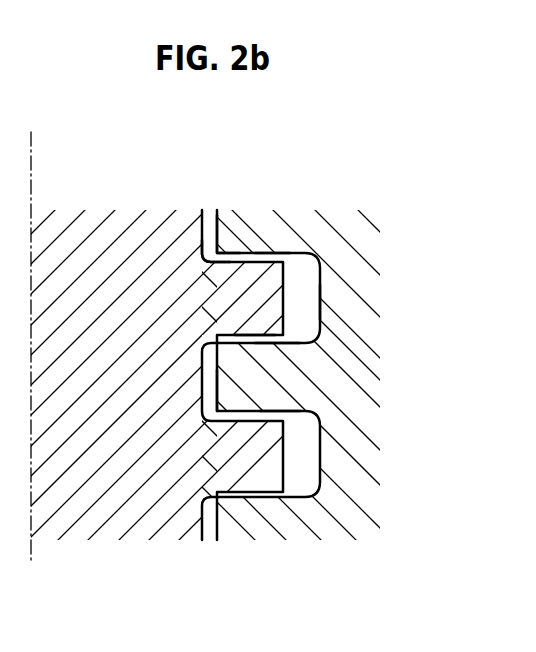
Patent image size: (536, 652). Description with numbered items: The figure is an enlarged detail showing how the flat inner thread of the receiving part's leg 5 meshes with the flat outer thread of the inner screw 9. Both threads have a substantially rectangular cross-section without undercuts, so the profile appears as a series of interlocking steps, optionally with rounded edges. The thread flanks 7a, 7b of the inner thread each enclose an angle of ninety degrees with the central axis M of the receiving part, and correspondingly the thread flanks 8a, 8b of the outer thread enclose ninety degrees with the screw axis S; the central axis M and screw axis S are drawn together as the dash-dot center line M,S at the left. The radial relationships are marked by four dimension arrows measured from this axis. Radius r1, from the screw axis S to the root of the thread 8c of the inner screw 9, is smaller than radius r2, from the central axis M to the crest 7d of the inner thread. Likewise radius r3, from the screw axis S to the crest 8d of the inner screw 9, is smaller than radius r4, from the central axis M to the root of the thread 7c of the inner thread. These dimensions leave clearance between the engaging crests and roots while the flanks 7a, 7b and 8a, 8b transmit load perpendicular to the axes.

The second component (housing body) 5 is at (345, 215).
The inner screw 9 is at (74, 217).
The thread flank of the inner thread 7a is at (273, 356).
The thread flank of the inner thread 7b is at (280, 413).
The root of the inner thread 7c is at (322, 296).
The crest of the inner thread 7d is at (222, 391).
The thread flank of the outer thread 8a is at (223, 270).
The thread flank of the outer thread 8b is at (254, 333).
The root of the outer thread 8c is at (207, 226).
The crest of the outer thread 8d is at (272, 258).
The radius to the root of the outer thread r1 is at (192, 403).
The radius to the crest of the inner thread r2 is at (207, 367).
The radius to the crest of the outer thread r3 is at (273, 312).
The radius to the root of the inner thread r4 is at (310, 283).
The central axis and screw axis M,S is at (36, 150).